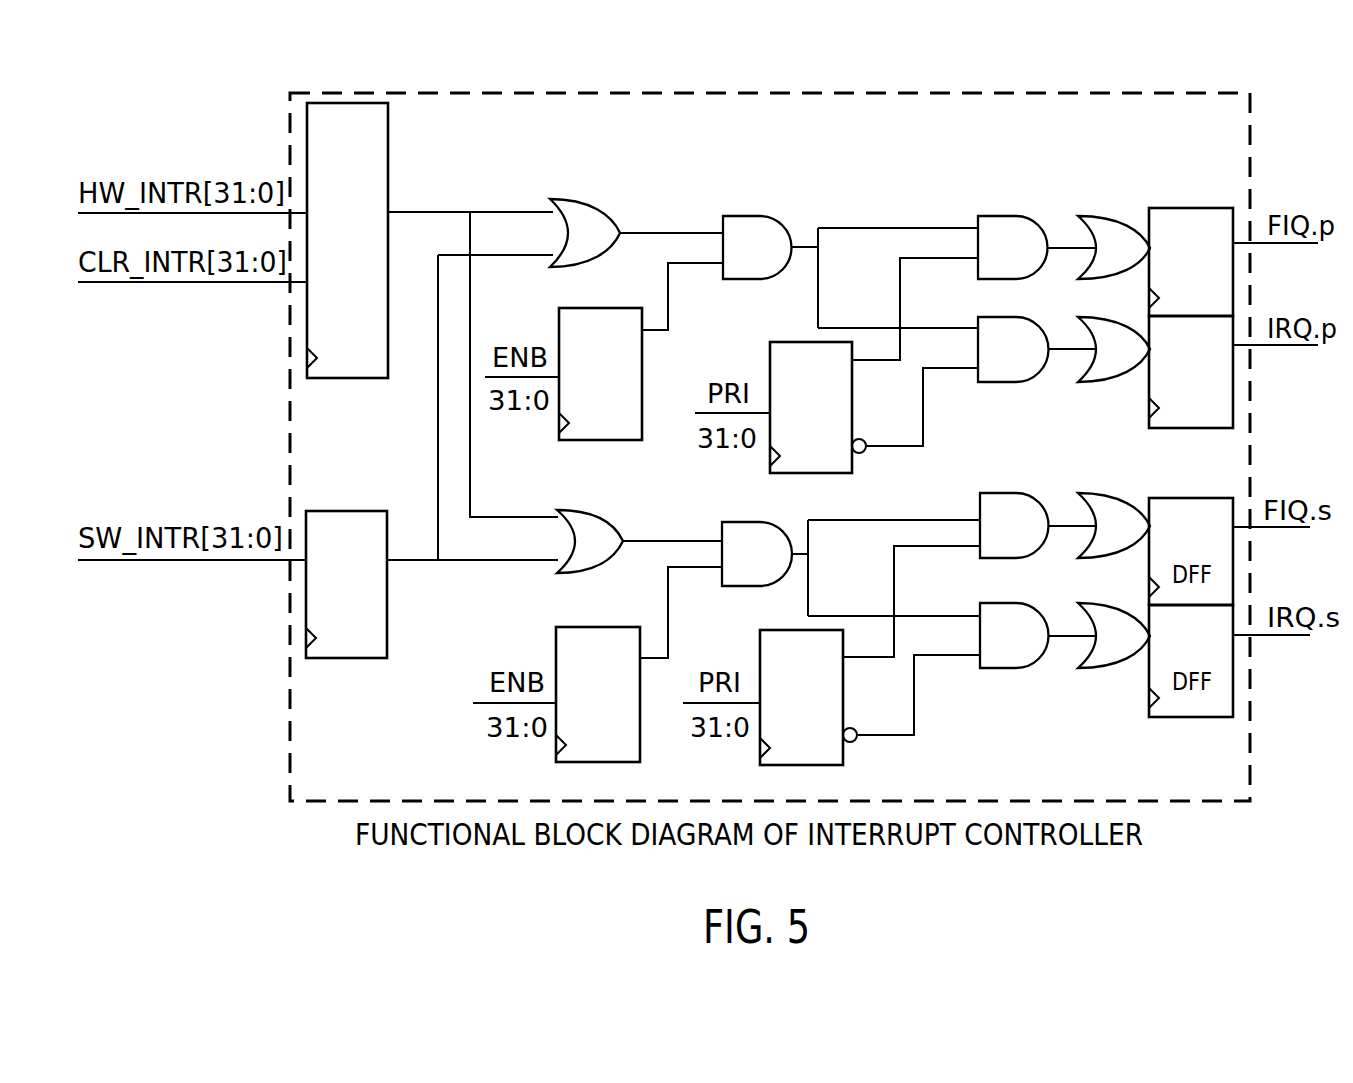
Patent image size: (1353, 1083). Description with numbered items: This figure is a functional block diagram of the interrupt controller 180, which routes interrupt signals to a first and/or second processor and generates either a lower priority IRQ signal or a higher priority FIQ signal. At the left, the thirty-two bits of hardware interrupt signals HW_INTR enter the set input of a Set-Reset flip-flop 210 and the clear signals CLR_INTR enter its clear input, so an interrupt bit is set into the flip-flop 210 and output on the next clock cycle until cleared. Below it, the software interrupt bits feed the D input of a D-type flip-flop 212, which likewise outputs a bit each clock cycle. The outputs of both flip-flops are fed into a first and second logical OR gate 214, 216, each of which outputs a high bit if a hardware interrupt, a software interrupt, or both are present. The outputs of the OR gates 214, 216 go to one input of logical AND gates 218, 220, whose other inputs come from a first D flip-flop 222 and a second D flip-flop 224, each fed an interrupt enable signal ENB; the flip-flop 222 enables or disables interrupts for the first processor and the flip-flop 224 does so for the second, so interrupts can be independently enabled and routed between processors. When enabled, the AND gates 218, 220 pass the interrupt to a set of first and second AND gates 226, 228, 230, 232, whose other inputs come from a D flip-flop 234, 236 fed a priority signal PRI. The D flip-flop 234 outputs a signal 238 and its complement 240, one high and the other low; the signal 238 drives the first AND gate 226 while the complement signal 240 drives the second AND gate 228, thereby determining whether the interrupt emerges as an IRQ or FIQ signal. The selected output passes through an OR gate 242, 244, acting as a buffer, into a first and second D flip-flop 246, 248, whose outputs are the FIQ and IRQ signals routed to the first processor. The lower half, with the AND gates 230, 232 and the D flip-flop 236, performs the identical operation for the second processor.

The interrupt controller 180 is at (1238, 133).
The Set-Reset flip-flop 210 is at (373, 141).
The D-type flip-flop 212 is at (368, 547).
The first logical OR gate 214 is at (565, 200).
The second logical OR gate 216 is at (573, 511).
The logical AND gate 218 is at (744, 214).
The logical AND gate 220 is at (742, 521).
The first D flip-flop 222 is at (626, 346).
The second D flip-flop 224 is at (622, 664).
The first AND gate 226 is at (990, 212).
The second AND gate 228 is at (978, 320).
The first AND gate 230 is at (993, 494).
The second AND gate 232 is at (995, 604).
The D flip-flop 234 is at (836, 379).
The D flip-flop 236 is at (831, 666).
The signal 238 is at (877, 361).
The complement signal 240 is at (926, 403).
The OR gate 242 is at (1098, 212).
The OR gate 244 is at (1082, 320).
The first D flip-flop 246 is at (1215, 247).
The second D flip-flop 248 is at (1215, 356).